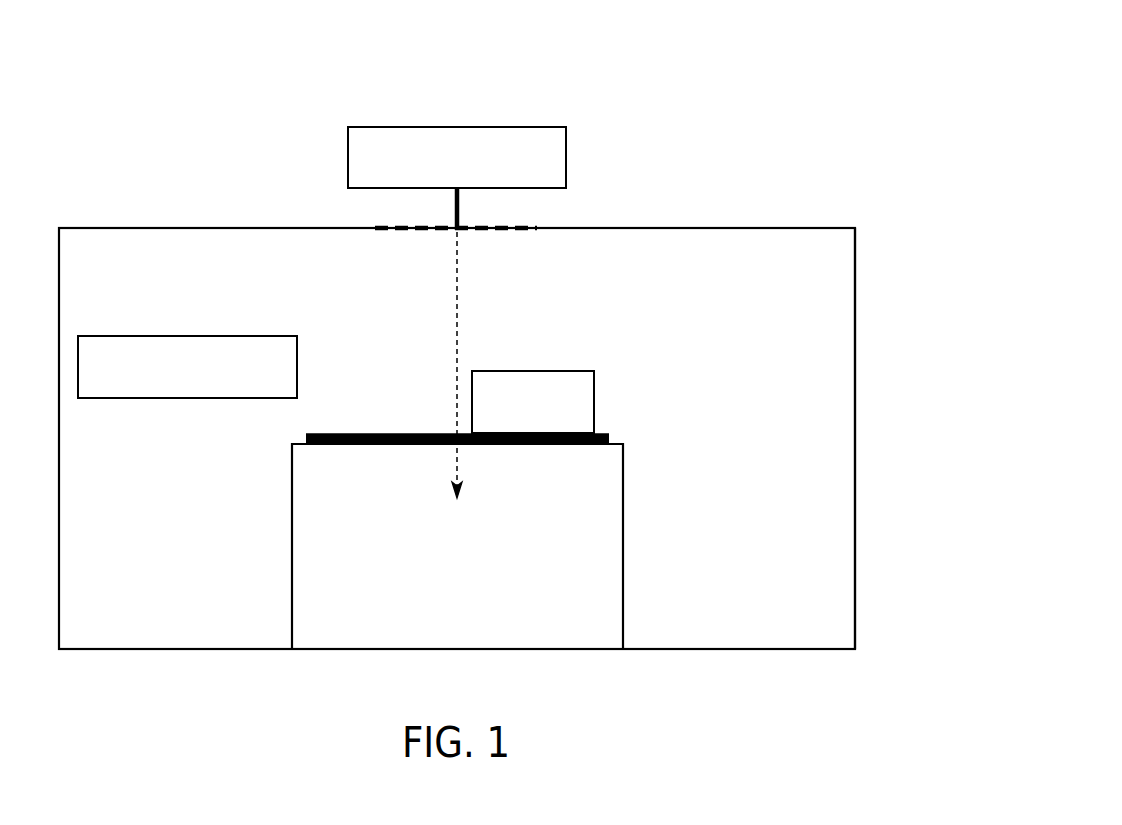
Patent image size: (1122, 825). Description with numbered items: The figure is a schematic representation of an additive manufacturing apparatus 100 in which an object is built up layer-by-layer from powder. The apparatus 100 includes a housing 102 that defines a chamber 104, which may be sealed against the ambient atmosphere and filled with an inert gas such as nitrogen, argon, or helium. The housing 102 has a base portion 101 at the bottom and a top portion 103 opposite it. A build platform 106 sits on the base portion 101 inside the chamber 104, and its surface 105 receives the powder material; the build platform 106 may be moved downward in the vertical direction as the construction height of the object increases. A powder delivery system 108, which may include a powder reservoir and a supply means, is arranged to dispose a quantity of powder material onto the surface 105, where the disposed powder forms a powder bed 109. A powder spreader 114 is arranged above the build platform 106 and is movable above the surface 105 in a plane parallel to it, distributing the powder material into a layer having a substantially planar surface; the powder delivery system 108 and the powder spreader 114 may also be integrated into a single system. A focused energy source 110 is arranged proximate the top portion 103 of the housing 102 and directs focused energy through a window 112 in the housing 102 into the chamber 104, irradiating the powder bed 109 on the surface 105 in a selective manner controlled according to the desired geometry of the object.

The additive manufacturing apparatus 100 is at (758, 73).
The base portion 101 is at (823, 651).
The housing 102 is at (855, 258).
The top portion 103 is at (83, 226).
The chamber 104 is at (727, 296).
The surface 105 is at (609, 440).
The build platform 106 is at (624, 545).
The powder delivery system 108 is at (205, 335).
The powder bed 109 is at (317, 433).
The focused energy source 110 is at (567, 150).
The window 112 is at (400, 231).
The powder spreader 114 is at (595, 385).